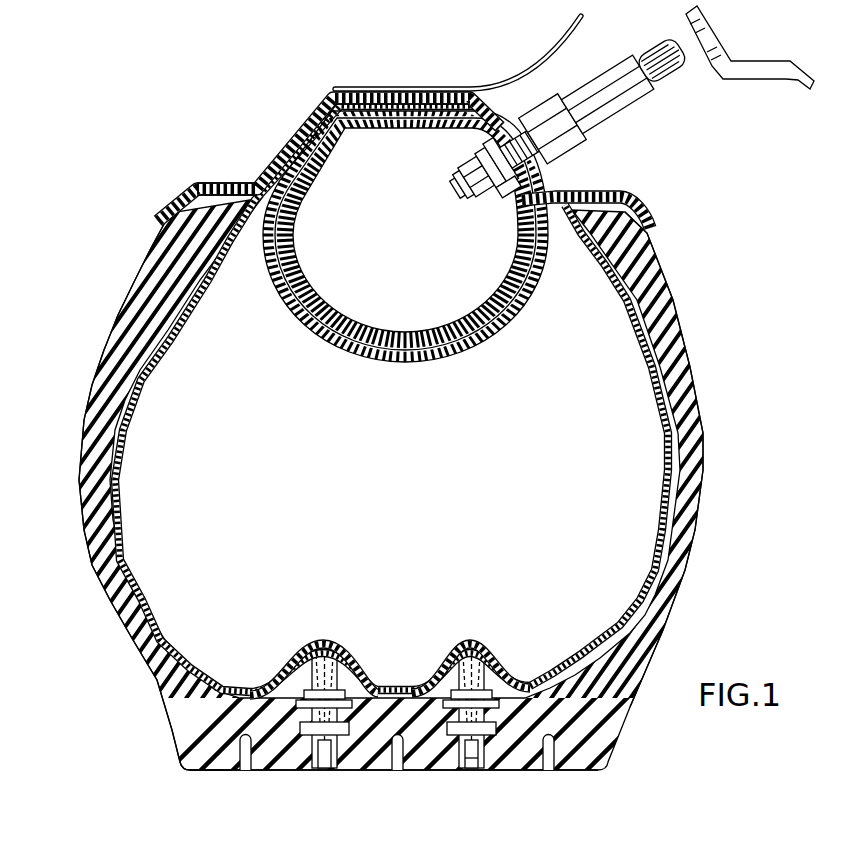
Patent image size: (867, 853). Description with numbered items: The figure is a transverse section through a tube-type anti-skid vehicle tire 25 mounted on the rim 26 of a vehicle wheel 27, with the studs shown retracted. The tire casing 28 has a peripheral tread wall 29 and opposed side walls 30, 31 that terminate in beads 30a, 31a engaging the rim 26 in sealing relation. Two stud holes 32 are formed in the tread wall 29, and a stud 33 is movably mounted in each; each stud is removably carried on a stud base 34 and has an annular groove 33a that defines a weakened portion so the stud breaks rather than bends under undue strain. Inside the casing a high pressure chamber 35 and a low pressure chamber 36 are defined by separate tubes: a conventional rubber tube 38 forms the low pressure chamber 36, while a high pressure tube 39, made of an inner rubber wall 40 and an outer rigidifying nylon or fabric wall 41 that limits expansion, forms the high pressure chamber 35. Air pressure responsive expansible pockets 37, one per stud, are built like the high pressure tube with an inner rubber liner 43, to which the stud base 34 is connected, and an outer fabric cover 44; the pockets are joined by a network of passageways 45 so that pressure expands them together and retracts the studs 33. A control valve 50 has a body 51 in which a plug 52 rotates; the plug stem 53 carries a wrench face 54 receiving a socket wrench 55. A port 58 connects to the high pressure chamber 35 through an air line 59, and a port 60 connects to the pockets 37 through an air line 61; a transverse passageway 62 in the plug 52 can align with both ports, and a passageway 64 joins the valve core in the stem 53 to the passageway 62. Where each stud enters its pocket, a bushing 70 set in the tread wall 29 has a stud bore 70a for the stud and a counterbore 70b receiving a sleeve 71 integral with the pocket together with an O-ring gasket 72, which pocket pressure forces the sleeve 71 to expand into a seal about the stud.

The anti-skid vehicle tire 25 is at (728, 310).
The rim 26 is at (326, 97).
The vehicle wheel 27 is at (583, 33).
The tire casing 28 is at (670, 285).
The peripheral tread wall 29 is at (358, 771).
The side wall 30 is at (83, 430).
The bead 30a is at (188, 217).
The side wall 31 is at (690, 393).
The bead 31a is at (622, 204).
The stud hole 32 is at (320, 778).
The stud 33 is at (316, 756).
The annular groove 33a is at (482, 771).
The stud base 34 is at (328, 646).
The high pressure chamber 35 is at (422, 246).
The low pressure chamber 36 is at (434, 488).
The expansible pocket 37 is at (331, 655).
The rubber tube 38 is at (118, 487).
The high pressure tube 39 is at (358, 125).
The inner wall 40 is at (394, 114).
The outer rigidifying wall 41 is at (352, 102).
The inner rubber liner 43 is at (502, 678).
The outer fabric cover 44 is at (508, 652).
The passageway 45 is at (396, 680).
The control valve 50 is at (544, 141).
The valve body 51 is at (552, 168).
The plug 52 is at (498, 197).
The stem 53 is at (600, 93).
The wrench face 54 is at (597, 147).
The socket wrench 55 is at (752, 64).
The port 58 is at (506, 112).
The air line 59 is at (476, 142).
The port 60 is at (517, 197).
The air line 61 is at (682, 443).
The passageway 62 is at (477, 152).
The passageway 64 is at (506, 126).
The bushing 70 is at (308, 727).
The stud bore 70a is at (330, 768).
The counterbore 70b is at (335, 676).
The sleeve 71 is at (182, 771).
The O-ring gasket 72 is at (296, 714).